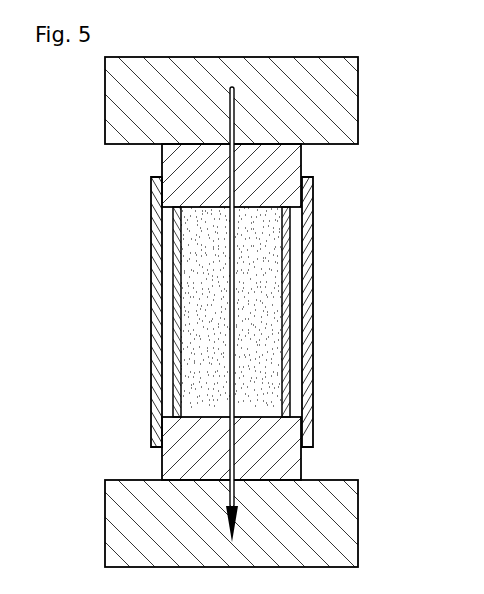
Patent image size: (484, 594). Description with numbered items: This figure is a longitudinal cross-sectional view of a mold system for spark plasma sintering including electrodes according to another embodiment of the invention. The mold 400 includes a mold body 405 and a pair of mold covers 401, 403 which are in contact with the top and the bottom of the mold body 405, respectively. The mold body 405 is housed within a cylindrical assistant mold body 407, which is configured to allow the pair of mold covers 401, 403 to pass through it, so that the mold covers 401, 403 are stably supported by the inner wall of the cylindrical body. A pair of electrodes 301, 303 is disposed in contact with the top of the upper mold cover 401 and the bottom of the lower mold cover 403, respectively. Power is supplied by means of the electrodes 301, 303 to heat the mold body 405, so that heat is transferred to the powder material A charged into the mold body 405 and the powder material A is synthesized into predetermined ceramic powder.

The electrode 301 is at (358, 100).
The electrode 303 is at (358, 520).
The mold 400 is at (210, 314).
The mold cover 401 is at (302, 160).
The mold cover 403 is at (302, 456).
The mold body 405 is at (287, 233).
The outer sleeve 407 is at (310, 306).
The powder material A is at (265, 357).